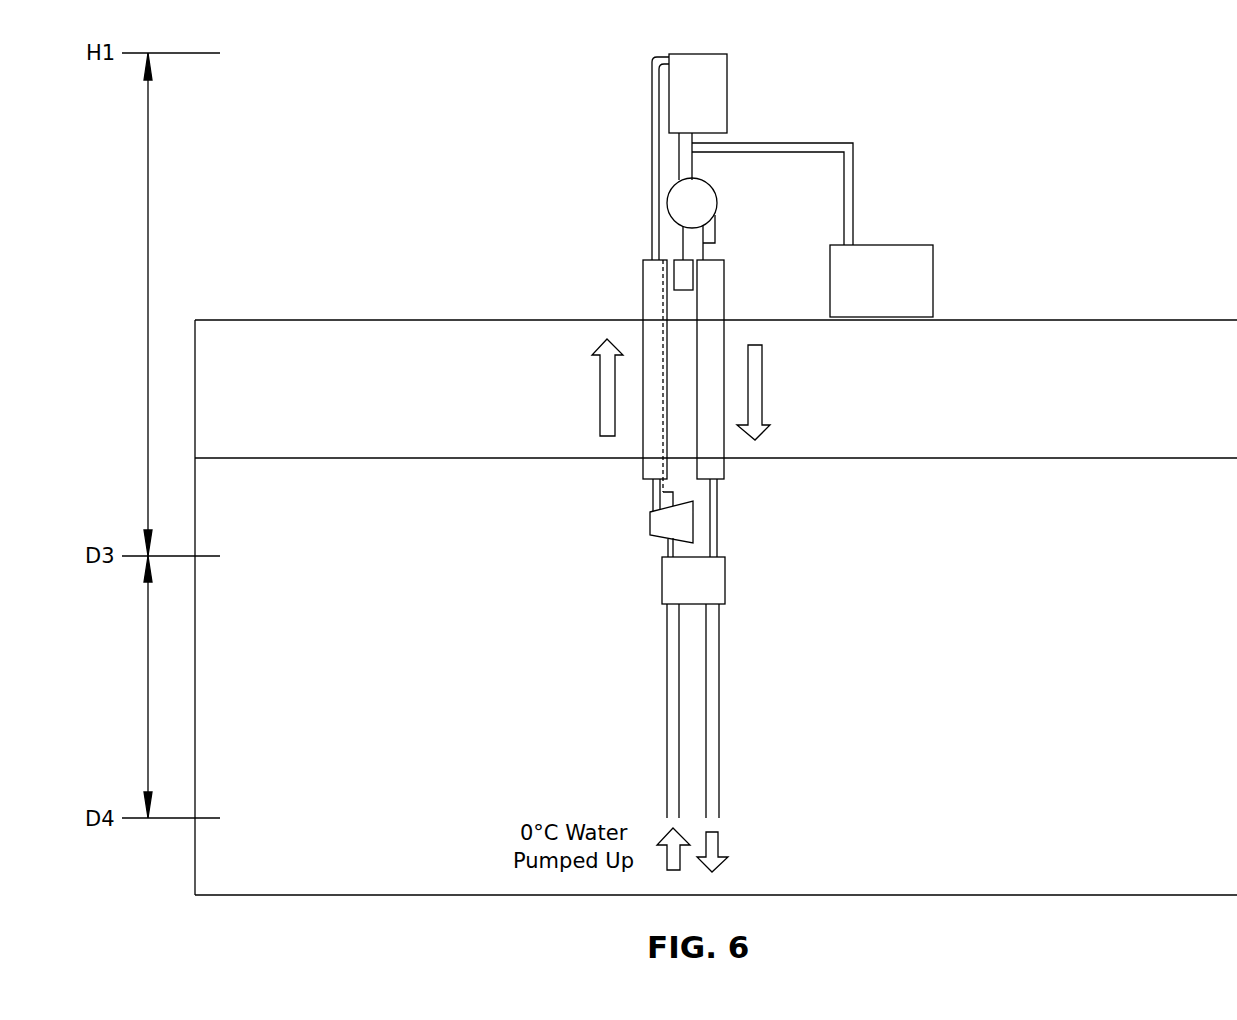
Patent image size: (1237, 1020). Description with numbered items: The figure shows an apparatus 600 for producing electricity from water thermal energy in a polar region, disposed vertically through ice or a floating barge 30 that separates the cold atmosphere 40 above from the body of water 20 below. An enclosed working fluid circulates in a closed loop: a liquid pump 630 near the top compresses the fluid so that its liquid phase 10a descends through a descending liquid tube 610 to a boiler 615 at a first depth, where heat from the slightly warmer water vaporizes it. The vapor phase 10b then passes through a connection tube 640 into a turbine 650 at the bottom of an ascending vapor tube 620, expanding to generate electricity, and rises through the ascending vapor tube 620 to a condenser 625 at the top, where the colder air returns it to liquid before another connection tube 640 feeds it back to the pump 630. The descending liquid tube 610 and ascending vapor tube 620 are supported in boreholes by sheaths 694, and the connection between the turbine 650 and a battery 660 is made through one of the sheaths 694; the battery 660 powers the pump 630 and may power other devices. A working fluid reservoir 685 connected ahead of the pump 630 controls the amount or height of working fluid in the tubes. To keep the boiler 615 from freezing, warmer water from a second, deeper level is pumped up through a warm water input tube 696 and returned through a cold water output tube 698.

The apparatus 600 is at (1090, 155).
The descending liquid tube 610 is at (717, 510).
The boiler 615 is at (736, 562).
The ascending vapor tube 620 is at (653, 173).
The condenser 625 is at (736, 73).
The liquid pump 630 is at (702, 203).
The connection tube 640 is at (688, 168).
The turbine 650 is at (658, 522).
The battery 660 is at (674, 265).
The working fluid reservoir 685 is at (881, 281).
The sheaths 694 is at (653, 306).
The warm water input tube 696 is at (665, 672).
The cold water output tube 698 is at (719, 680).
The liquid phase 10a is at (787, 392).
The vapor phase 10b is at (563, 387).
The body of water 20 is at (716, 607).
The ice or floating barge 30 is at (716, 389).
The atmosphere 40 is at (329, 167).